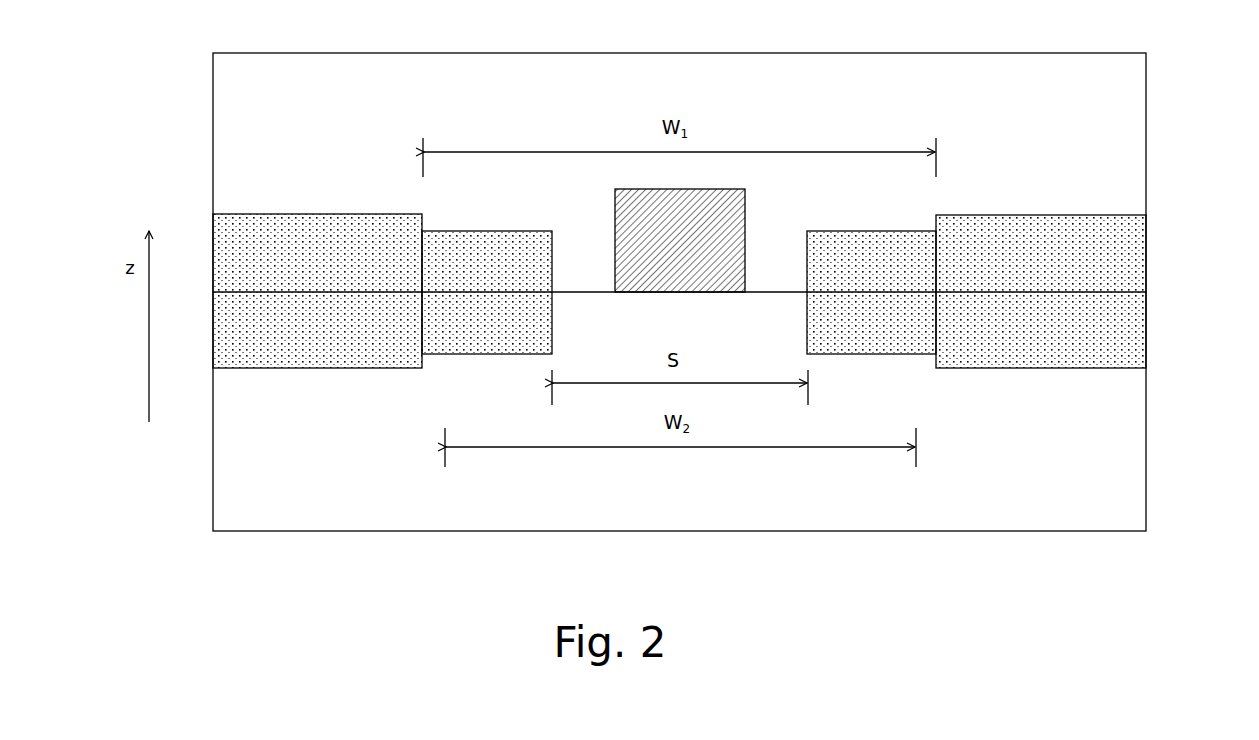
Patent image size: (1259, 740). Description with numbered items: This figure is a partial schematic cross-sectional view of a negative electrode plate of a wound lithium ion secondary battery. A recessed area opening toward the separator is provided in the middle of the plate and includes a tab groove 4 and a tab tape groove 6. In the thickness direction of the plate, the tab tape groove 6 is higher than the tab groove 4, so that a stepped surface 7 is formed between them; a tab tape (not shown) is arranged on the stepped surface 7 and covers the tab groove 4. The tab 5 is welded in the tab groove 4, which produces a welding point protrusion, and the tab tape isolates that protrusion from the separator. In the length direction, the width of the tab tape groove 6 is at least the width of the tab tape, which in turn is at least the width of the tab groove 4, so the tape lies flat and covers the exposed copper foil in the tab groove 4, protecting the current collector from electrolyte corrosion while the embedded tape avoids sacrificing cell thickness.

The tab groove 4 is at (587, 230).
The tab 5 is at (747, 242).
The tab tape groove 6 is at (917, 217).
The stepped surface 7 is at (495, 225).